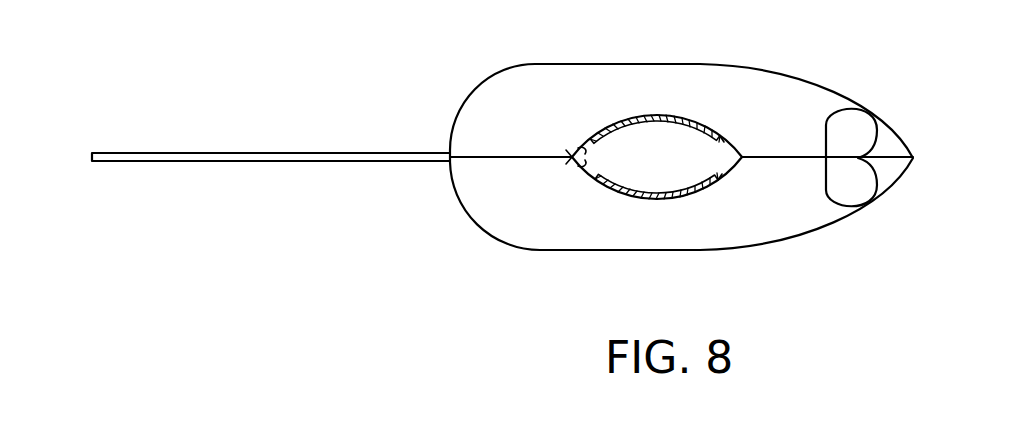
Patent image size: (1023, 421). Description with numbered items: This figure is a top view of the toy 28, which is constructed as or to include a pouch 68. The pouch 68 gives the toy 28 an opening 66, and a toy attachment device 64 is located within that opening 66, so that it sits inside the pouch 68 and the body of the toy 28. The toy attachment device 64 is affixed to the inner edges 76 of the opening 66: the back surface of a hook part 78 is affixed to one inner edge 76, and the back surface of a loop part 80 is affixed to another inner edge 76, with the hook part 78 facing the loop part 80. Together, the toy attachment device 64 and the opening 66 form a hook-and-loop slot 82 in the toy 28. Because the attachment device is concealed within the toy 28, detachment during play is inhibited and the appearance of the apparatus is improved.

The toy 28 is at (985, 173).
The toy attachment device 64 is at (733, 188).
The opening 66 is at (580, 164).
The pouch 68 is at (640, 251).
The inner edges 76 is at (582, 152).
The hook part 78 is at (662, 115).
The loop part 80 is at (613, 192).
The hook-and-loop slot 82 is at (669, 200).